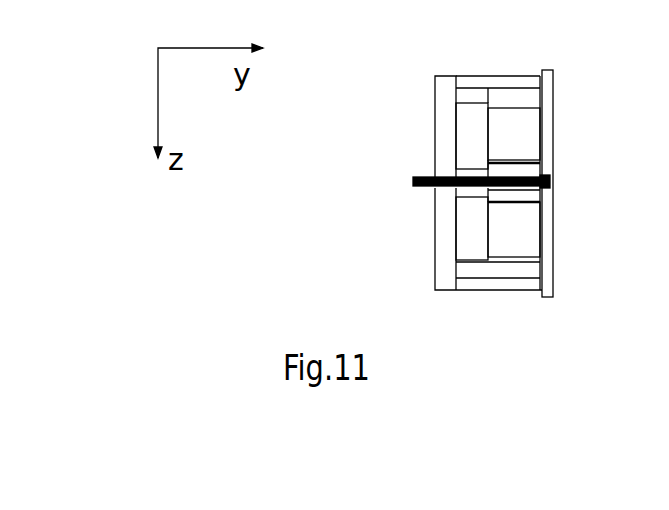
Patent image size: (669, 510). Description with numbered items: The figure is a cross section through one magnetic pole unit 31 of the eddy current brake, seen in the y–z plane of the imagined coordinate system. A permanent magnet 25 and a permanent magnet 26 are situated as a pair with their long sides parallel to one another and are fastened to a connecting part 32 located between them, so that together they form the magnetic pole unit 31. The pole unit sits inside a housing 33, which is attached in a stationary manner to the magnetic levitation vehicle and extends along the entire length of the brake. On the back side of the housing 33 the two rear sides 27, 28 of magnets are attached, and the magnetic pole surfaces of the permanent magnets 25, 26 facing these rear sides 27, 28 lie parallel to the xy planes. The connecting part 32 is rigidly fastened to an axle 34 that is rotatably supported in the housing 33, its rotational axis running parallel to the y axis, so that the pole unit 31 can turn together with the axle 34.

The permanent magnet 25 is at (519, 120).
The permanent magnet 26 is at (508, 238).
The rear side of magnets 27 is at (466, 130).
The rear side of magnets 28 is at (467, 227).
The magnetic pole unit 31 is at (560, 138).
The connecting part 32 is at (518, 195).
The housing 33 is at (446, 88).
The axle 34 is at (413, 179).